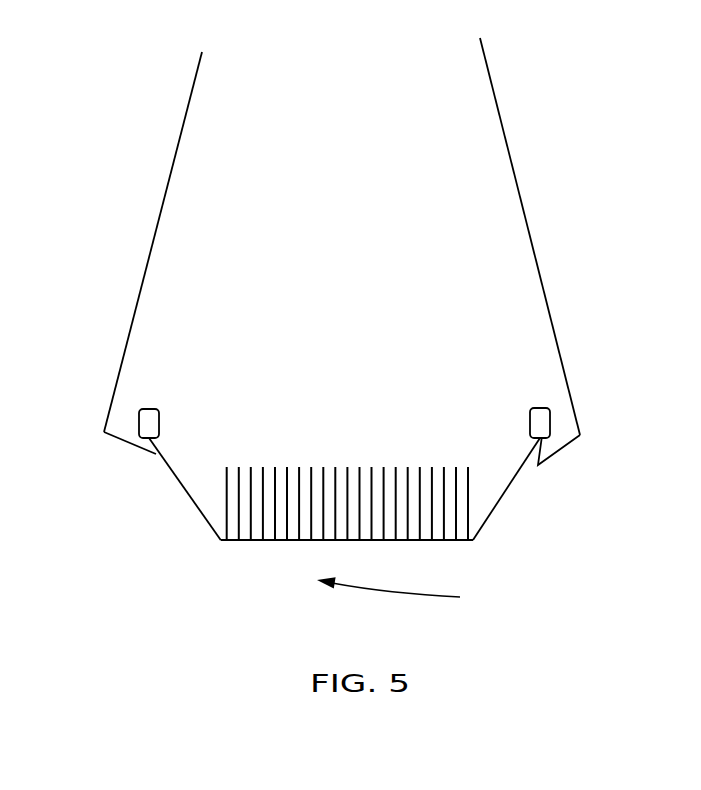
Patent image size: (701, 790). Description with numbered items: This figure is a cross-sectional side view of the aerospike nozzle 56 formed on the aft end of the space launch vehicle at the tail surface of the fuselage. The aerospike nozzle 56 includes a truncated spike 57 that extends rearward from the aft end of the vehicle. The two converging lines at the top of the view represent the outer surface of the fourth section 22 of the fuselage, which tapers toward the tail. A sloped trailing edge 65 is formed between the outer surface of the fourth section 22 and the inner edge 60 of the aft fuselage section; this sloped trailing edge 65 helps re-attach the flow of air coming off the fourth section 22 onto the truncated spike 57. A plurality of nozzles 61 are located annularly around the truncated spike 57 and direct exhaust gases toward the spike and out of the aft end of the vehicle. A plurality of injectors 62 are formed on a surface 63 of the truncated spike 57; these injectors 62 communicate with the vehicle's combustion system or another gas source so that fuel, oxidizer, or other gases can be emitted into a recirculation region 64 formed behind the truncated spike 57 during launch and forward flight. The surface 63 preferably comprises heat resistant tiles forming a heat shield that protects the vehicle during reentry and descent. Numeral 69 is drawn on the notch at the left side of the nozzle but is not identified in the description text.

The fourth section 22 is at (185, 115).
The aerospike nozzle 56 is at (385, 499).
The truncated spike 57 is at (483, 522).
The inner edge 60 is at (152, 463).
The nozzles 61 is at (147, 405).
The injectors 62 is at (324, 467).
The surface 63 is at (295, 540).
The recirculation region 64 is at (402, 595).
The sloped trailing edge 65 is at (563, 450).
The left mounting notch 69 is at (152, 452).